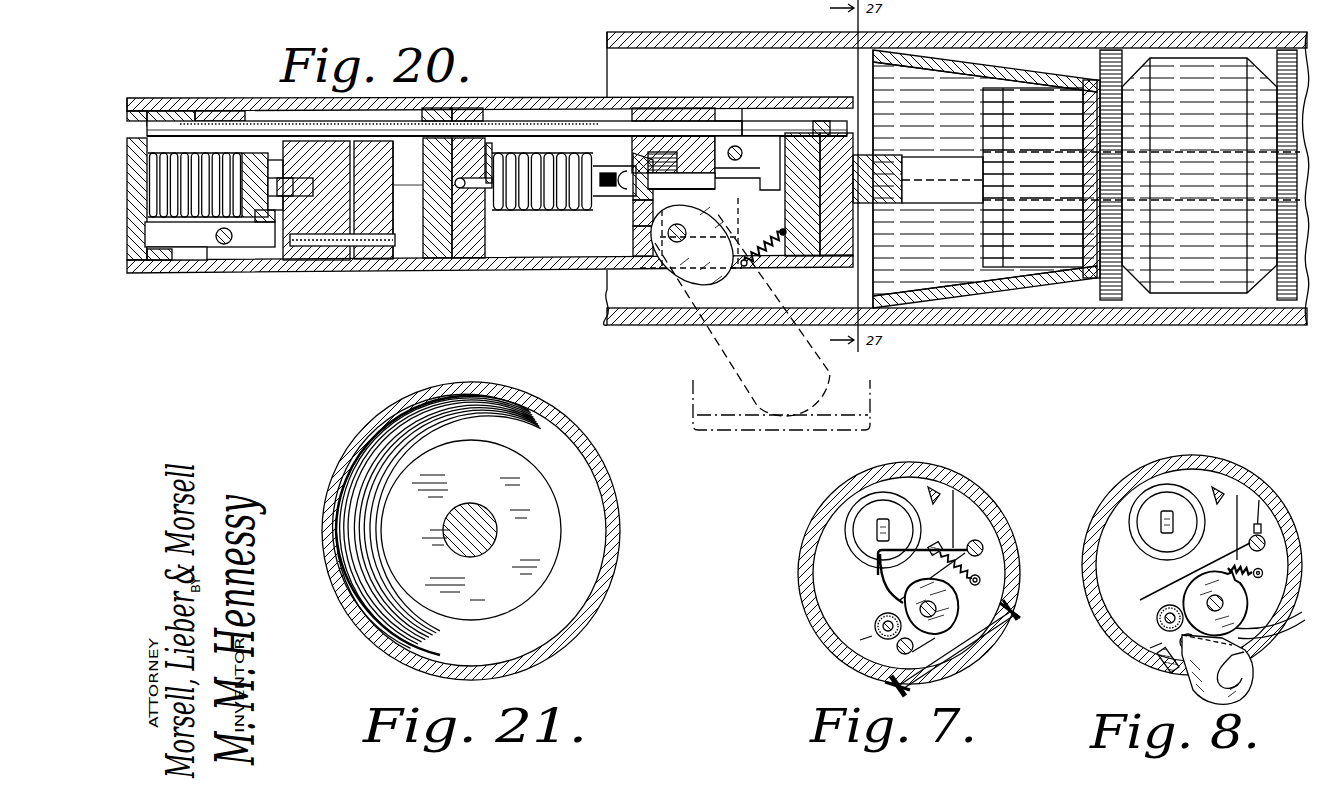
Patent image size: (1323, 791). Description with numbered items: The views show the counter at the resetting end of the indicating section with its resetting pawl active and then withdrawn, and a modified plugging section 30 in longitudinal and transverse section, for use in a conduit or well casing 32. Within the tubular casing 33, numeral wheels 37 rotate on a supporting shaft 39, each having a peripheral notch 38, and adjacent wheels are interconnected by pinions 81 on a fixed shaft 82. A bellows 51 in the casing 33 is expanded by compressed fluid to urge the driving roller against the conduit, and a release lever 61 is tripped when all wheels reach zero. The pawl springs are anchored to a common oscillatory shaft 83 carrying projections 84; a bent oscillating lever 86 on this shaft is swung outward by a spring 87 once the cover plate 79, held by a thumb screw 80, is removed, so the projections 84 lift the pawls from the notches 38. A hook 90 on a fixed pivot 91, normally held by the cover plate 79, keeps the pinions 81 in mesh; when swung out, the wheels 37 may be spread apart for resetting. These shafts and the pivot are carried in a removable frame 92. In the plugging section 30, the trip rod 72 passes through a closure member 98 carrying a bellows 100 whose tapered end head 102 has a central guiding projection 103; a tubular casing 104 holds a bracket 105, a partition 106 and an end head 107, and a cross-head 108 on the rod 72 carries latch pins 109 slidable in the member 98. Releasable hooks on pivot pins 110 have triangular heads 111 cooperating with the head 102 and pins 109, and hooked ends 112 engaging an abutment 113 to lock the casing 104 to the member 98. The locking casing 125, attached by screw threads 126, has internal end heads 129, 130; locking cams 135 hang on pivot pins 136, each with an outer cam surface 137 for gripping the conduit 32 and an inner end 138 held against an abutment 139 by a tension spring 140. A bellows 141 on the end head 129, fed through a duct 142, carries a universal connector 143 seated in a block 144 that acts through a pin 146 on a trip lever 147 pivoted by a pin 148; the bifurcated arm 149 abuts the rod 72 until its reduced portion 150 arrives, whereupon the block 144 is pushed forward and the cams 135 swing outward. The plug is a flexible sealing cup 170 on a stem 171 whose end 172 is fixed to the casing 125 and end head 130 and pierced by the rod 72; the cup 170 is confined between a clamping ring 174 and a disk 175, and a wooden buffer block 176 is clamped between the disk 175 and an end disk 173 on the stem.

In FIG. 20, the plugging section 30 is at (565, 274).
In FIG. 20, the conduit or well casing 32 is at (730, 46).
In FIG. 21, the conduit or well casing 32 is at (370, 426).
In FIG. 8, the tubular elongated casing 33 is at (1192, 459).
In FIG. 7, the numeral wheels 37 is at (910, 605).
In FIG. 8, the numeral wheels 37 is at (1200, 588).
In FIG. 7, the notch 38 is at (982, 582).
In FIG. 8, the notch 38 is at (1256, 578).
In FIG. 7, the supporting shaft 39 is at (936, 609).
In FIG. 8, the supporting shaft 39 is at (1224, 605).
In FIG. 7, the bellows 51 is at (868, 515).
In FIG. 8, the bellows 51 is at (1152, 527).
In FIG. 7, the release lever 61 is at (948, 484).
In FIG. 8, the release lever 61 is at (1224, 486).
In FIG. 20, the rod 72 is at (256, 127).
In FIG. 7, the cover plate 79 is at (970, 623).
In FIG. 7, the thumb screw 80 is at (906, 690).
In FIG. 7, the pinions 81 is at (875, 617).
In FIG. 8, the pinions 81 is at (1160, 616).
In FIG. 7, the fixed shaft 82 is at (883, 627).
In FIG. 8, the fixed shaft 82 is at (1162, 618).
In FIG. 7, the oscillatory shaft 83 is at (984, 546).
In FIG. 8, the oscillatory shaft 83 is at (1262, 535).
In FIG. 7, the local projections 84 is at (984, 546).
In FIG. 8, the local projections 84 is at (1259, 505).
In FIG. 7, the bent oscillating lever 86 is at (882, 581).
In FIG. 8, the bent oscillating lever 86 is at (1264, 638).
In FIG. 7, the spring 87 is at (972, 573).
In FIG. 8, the spring 87 is at (1252, 560).
In FIG. 7, the hook 90 is at (930, 650).
In FIG. 8, the hook 90 is at (1188, 690).
In FIG. 7, the fixed pivot 91 is at (912, 652).
In FIG. 8, the fixed pivot 91 is at (1166, 660).
In FIG. 7, the removable frame 92 is at (872, 640).
In FIG. 8, the removable frame 92 is at (1155, 645).
In FIG. 20, the closure member 98 is at (129, 101).
In FIG. 20, the bellows 100 is at (191, 155).
In FIG. 20, the tapered end head 102 is at (251, 160).
In FIG. 20, the central guiding projection 103 is at (305, 190).
In FIG. 20, the tubular casing 104 is at (305, 264).
In FIG. 20, the bracket 105 is at (222, 259).
In FIG. 20, the partition 106 is at (360, 260).
In FIG. 20, the end head 107 is at (430, 212).
In FIG. 20, the cross-head 108 is at (393, 196).
In FIG. 20, the latch pins 109 is at (393, 252).
In FIG. 20, the pivot pins 110 is at (226, 250).
In FIG. 20, the triangular head 111 is at (260, 252).
In FIG. 20, the hooked end 112 is at (152, 266).
In FIG. 20, the abutment 113 is at (178, 268).
In FIG. 20, the locking casing 125 is at (676, 110).
In FIG. 20, the screw threads 126 is at (430, 260).
In FIG. 20, the end head 129 is at (473, 244).
In FIG. 20, the end head 130 is at (810, 150).
In FIG. 20, the locking cams 135 is at (720, 349).
In FIG. 20, the pivot pin 136 is at (648, 242).
In FIG. 20, the outer cam surface 137 is at (730, 284).
In FIG. 20, the inner end 138 is at (652, 214).
In FIG. 20, the abutment 139 is at (648, 230).
In FIG. 20, the tension spring 140 is at (774, 226).
In FIG. 20, the bellows 141 is at (540, 206).
In FIG. 20, the duct 142 is at (462, 188).
In FIG. 20, the adjustable universal connector 143 is at (609, 174).
In FIG. 20, the block 144 is at (672, 124).
In FIG. 20, the pin 146 is at (710, 184).
In FIG. 20, the trip lever 147 is at (752, 181).
In FIG. 20, the pin 148 is at (740, 158).
In FIG. 20, the bifurcated arm 149 is at (763, 127).
In FIG. 20, the reduced portion 150 is at (718, 128).
In FIG. 20, the flexible sealing cup 170 is at (962, 54).
In FIG. 21, the flexible sealing cup 170 is at (380, 598).
In FIG. 20, the stem 171 is at (943, 200).
In FIG. 21, the stem 171 is at (490, 492).
In FIG. 20, the stem end 172 is at (833, 260).
In FIG. 20, the end disk 173 is at (1288, 300).
In FIG. 20, the clamping ring 174 is at (1045, 243).
In FIG. 21, the clamping ring 174 is at (533, 560).
In FIG. 20, the disk 175 is at (1111, 295).
In FIG. 20, the buffer block 176 is at (1188, 268).